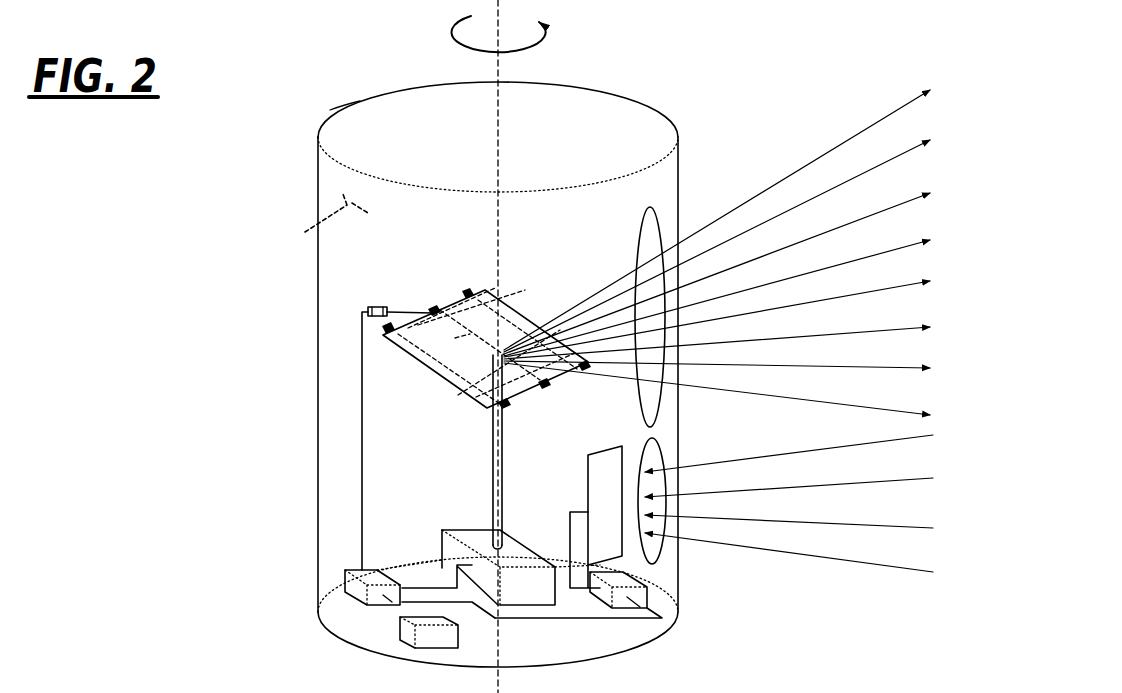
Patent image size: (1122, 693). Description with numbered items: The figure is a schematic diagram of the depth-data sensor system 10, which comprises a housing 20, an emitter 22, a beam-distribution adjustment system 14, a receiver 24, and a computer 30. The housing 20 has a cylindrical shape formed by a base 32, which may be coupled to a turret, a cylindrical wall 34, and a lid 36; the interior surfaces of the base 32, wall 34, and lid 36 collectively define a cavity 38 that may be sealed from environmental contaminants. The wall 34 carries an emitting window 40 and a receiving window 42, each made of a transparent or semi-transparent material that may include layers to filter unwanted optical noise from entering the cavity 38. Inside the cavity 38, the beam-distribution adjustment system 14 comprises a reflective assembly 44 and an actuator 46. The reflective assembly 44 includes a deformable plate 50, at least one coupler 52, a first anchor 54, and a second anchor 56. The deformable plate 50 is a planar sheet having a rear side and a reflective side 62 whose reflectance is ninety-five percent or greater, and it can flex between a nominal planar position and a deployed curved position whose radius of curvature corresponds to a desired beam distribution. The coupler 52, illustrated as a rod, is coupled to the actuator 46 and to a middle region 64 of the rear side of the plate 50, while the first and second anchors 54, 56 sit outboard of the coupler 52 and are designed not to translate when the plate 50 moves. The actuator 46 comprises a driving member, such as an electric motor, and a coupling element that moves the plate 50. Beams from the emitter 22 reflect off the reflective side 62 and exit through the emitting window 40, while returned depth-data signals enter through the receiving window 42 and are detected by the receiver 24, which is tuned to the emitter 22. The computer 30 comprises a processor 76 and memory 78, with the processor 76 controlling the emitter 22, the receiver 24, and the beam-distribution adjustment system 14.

The sensor system 10 is at (632, 47).
The housing 20 is at (624, 97).
The lid 36 is at (340, 122).
The cavity 38 is at (305, 232).
The cylindrical wall 34 is at (318, 430).
The base 32 is at (485, 652).
The beam-distribution adjustment system 14 is at (397, 272).
The reflective assembly 44 is at (425, 374).
The deformable plate 50 is at (465, 317).
The coupler 52 is at (462, 337).
The first anchor 54 is at (464, 294).
The second anchor 56 is at (386, 331).
The reflective side 62 is at (518, 388).
The middle region 64 is at (466, 372).
The actuator 46 is at (377, 300).
The emitter 22 is at (471, 527).
The receiver 24 is at (591, 478).
The emitting window 40 is at (657, 228).
The receiving window 42 is at (660, 462).
The computer 30 is at (361, 584).
The processor 76 is at (378, 578).
The memory 78 is at (407, 630).